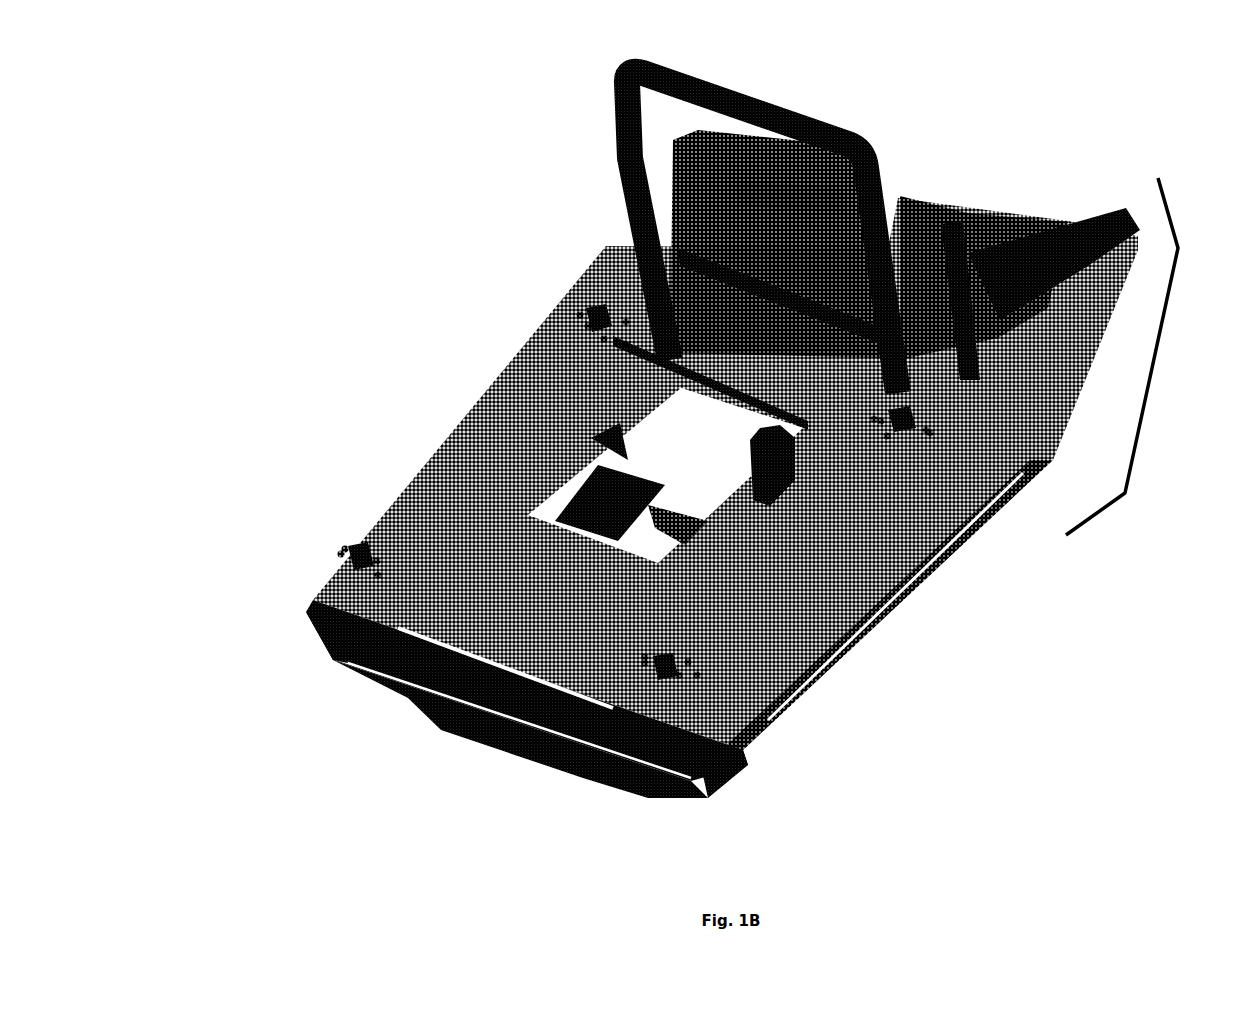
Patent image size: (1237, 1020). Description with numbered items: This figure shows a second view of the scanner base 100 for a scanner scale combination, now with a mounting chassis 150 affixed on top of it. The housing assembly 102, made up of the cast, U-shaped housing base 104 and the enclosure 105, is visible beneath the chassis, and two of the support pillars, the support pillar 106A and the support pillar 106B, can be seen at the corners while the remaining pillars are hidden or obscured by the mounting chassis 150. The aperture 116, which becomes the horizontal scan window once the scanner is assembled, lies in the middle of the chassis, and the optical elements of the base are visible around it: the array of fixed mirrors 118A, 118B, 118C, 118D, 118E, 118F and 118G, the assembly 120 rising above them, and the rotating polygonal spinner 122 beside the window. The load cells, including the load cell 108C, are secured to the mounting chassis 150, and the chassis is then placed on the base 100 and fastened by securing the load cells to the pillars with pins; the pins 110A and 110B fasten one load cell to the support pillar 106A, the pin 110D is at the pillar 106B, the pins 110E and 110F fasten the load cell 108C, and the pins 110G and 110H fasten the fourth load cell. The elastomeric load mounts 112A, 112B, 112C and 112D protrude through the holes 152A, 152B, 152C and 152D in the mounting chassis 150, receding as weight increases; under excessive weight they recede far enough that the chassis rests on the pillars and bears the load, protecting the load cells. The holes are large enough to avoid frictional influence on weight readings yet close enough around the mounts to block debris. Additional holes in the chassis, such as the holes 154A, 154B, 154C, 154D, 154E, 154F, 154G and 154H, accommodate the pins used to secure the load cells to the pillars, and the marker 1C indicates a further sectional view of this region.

The base 100 is at (252, 174).
The housing assembly 102 is at (1148, 346).
The housing base 104 is at (851, 643).
The enclosure 105 is at (852, 585).
The support pillar 106A is at (712, 710).
The support pillar 106B is at (340, 631).
The load cell 108C is at (657, 427).
The pin 110A is at (690, 667).
The pin 110B is at (636, 655).
The pin 110D is at (332, 546).
The pin 110E is at (618, 336).
The pin 110F is at (568, 309).
The pin 110G is at (922, 425).
The pin 110H is at (872, 413).
The load mount 112A is at (653, 648).
The load mount 112B is at (354, 538).
The load mount 112C is at (589, 304).
The load mount 112D is at (890, 405).
The aperture 116 is at (548, 479).
The fixed mirror 118A is at (697, 183).
The fixed mirror 118B is at (760, 206).
The fixed mirror 118C is at (805, 206).
The fixed mirror 118D is at (892, 204).
The fixed mirror 118E is at (935, 221).
The fixed mirror 118F is at (960, 249).
The fixed mirror 118G is at (995, 286).
The assembly 120 is at (609, 72).
The rotating polygonal spinner 122 is at (742, 455).
The mounting chassis 150 is at (479, 403).
The hole 152A is at (680, 653).
The hole 152B is at (370, 553).
The hole 152C is at (595, 333).
The hole 152D is at (878, 428).
The hole 154A is at (670, 667).
The hole 154B is at (636, 648).
The fastener 154C is at (370, 567).
The fastener 154D is at (336, 540).
The fastener 154E is at (620, 314).
The fastener 154F is at (578, 318).
The fastener 154G is at (918, 422).
The fastener 154H is at (866, 410).
The section view indicator 1C is at (368, 568).